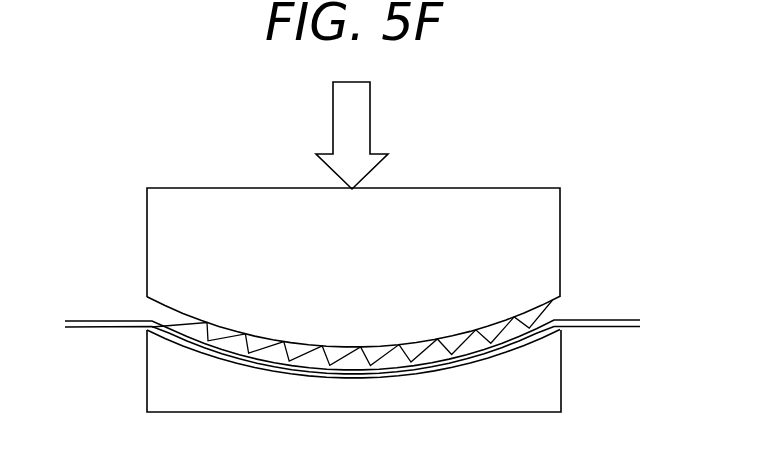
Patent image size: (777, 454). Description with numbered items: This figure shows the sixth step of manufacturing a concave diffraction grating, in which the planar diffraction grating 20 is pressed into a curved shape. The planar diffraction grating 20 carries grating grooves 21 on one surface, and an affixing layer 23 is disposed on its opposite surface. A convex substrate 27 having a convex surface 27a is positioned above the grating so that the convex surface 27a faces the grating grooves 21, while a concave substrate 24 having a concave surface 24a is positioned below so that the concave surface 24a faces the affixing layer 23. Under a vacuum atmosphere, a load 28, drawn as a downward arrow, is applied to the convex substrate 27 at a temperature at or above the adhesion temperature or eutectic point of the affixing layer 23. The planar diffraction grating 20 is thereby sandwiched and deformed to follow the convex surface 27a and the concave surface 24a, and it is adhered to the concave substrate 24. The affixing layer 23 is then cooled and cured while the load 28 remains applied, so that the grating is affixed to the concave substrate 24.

The planar diffraction grating 20 is at (108, 320).
The grating grooves 21 is at (498, 338).
The affixing layer 23 is at (175, 343).
The concave substrate 24 is at (546, 388).
The concave surface 24a is at (540, 337).
The convex substrate 27 is at (545, 229).
The convex surface 27a is at (552, 300).
The load 28 is at (360, 122).